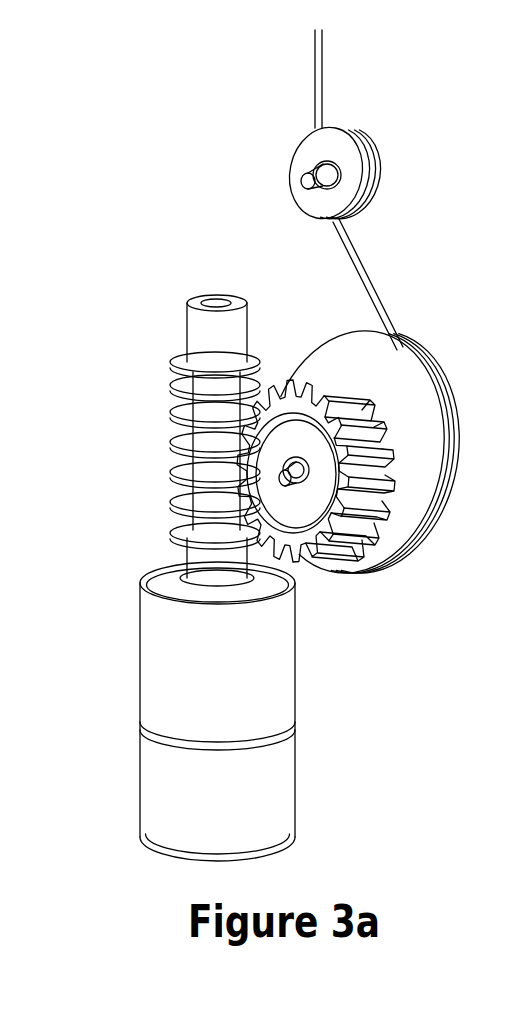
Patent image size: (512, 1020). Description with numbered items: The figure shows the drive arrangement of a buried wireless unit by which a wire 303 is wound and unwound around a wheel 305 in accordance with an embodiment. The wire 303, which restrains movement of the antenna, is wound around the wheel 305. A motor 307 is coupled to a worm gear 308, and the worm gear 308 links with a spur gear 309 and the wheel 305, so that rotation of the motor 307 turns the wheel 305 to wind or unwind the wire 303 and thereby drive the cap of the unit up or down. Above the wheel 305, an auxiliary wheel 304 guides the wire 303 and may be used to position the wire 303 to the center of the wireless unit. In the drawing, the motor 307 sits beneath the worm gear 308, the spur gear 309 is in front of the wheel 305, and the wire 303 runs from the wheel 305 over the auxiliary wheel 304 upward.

The wire 303 is at (310, 95).
The auxiliary wheel 304 is at (297, 180).
The wheel 305 is at (405, 573).
The motor 307 is at (137, 670).
The worm gear 308 is at (170, 405).
The spur gear 309 is at (313, 568).